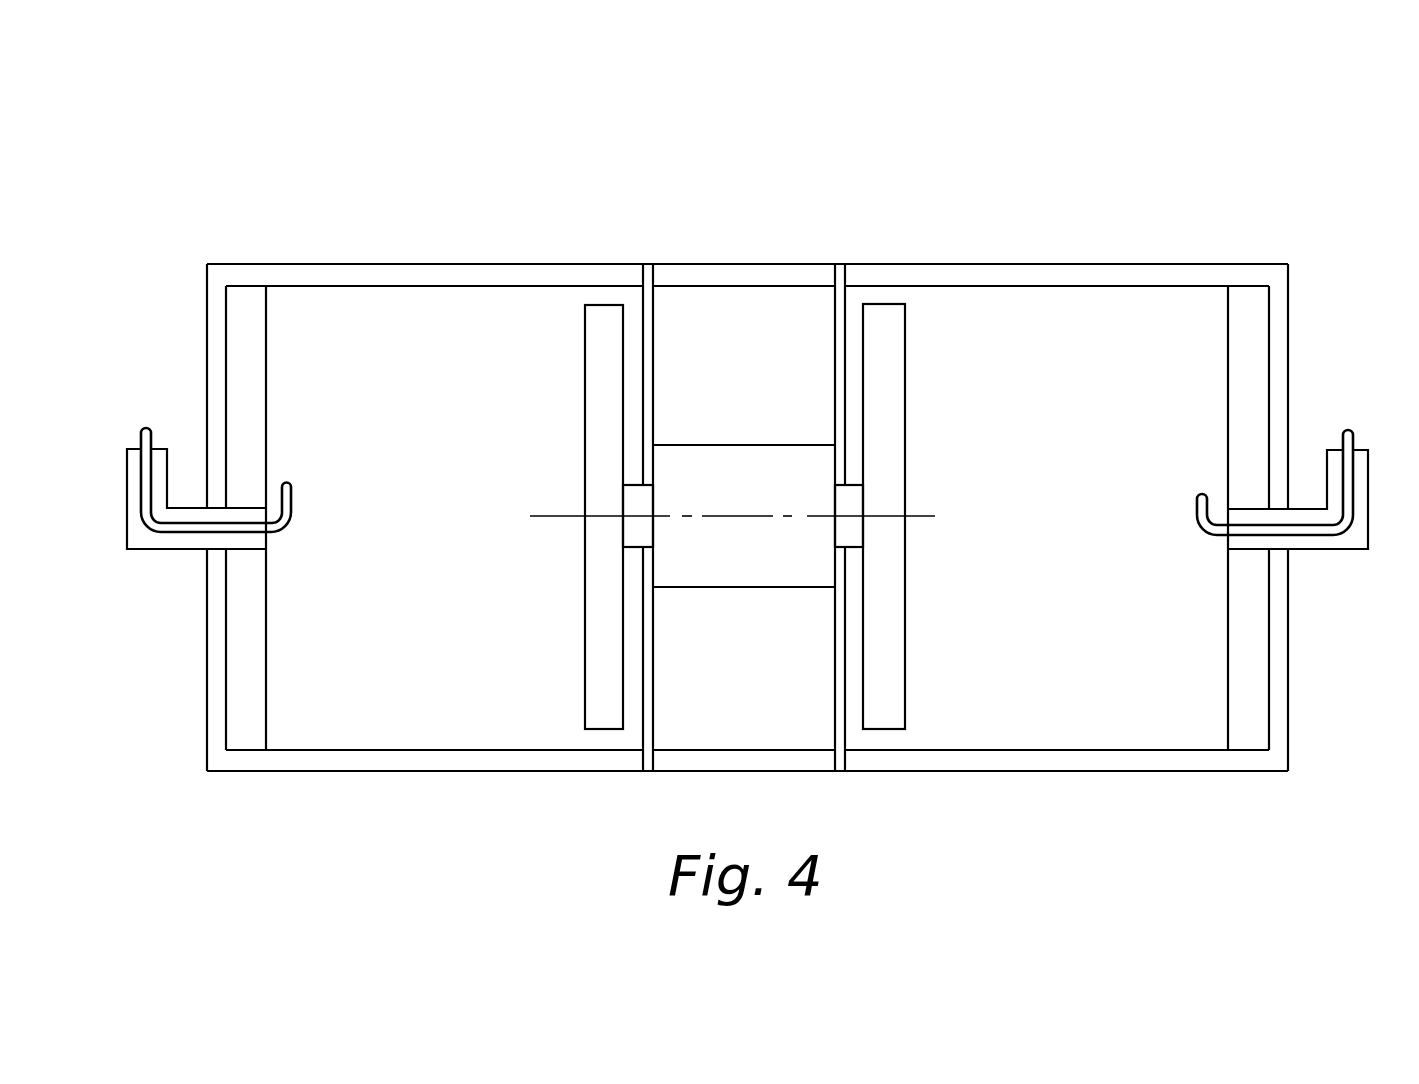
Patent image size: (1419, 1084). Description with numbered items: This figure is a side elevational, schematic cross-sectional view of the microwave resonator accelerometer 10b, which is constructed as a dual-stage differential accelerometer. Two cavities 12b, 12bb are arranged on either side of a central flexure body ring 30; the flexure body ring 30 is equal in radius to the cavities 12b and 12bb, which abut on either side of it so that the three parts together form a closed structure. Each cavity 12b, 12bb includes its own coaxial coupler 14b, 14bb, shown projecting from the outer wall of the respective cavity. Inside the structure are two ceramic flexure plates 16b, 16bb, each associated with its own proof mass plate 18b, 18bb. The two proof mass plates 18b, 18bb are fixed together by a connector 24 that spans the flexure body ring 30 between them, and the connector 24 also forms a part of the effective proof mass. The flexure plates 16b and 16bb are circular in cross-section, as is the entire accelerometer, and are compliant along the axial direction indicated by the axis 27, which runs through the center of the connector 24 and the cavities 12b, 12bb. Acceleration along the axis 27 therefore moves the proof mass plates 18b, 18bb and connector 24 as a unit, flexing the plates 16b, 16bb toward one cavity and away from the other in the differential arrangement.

The microwave resonator accelerometer 10b is at (1071, 124).
The cavity 12b is at (423, 265).
The cavity 12bb is at (1032, 265).
The flexure body ring 30 is at (753, 265).
The ceramic flexure plate 16b is at (655, 332).
The ceramic flexure plate 16bb is at (835, 660).
The proof mass plate 18b is at (585, 643).
The proof mass plate 18bb is at (904, 646).
The connector 24 is at (726, 445).
The axis 27 is at (555, 516).
The coaxial coupler 14b is at (127, 500).
The coaxial coupler 14bb is at (1341, 550).